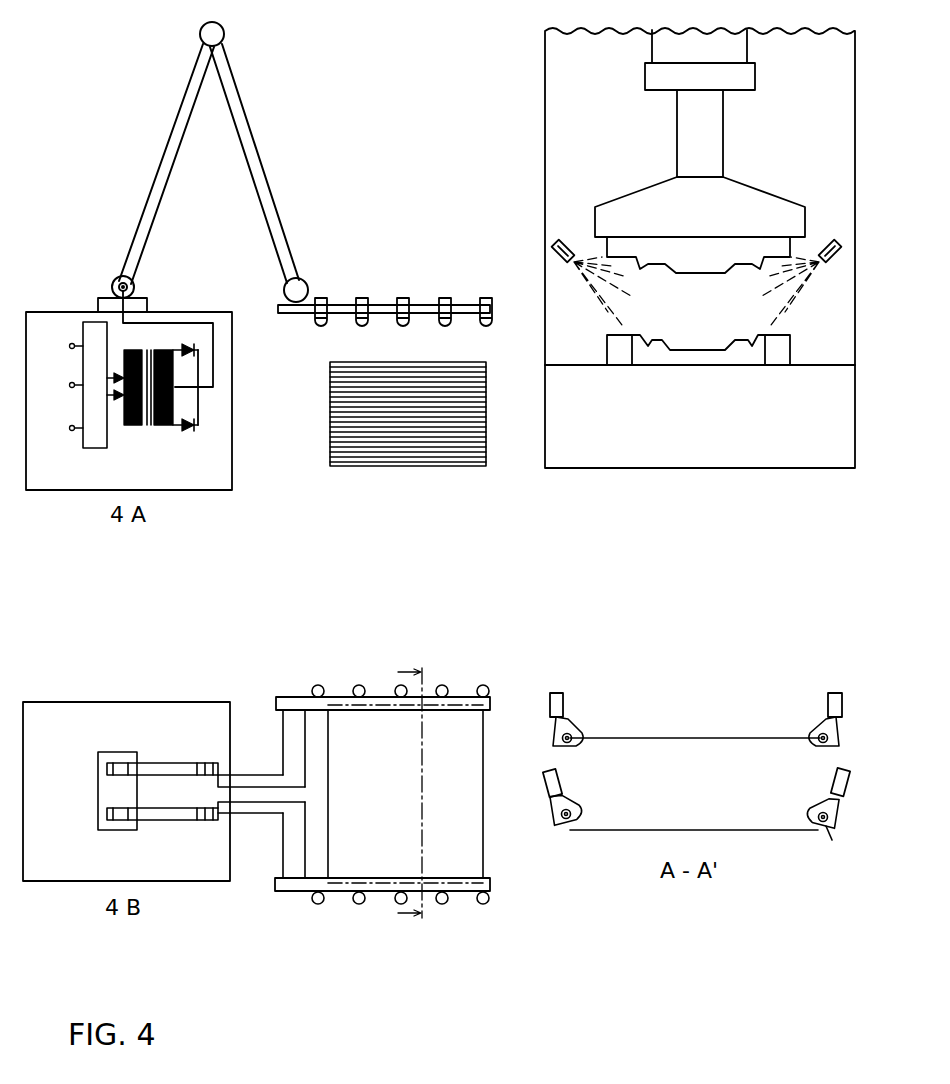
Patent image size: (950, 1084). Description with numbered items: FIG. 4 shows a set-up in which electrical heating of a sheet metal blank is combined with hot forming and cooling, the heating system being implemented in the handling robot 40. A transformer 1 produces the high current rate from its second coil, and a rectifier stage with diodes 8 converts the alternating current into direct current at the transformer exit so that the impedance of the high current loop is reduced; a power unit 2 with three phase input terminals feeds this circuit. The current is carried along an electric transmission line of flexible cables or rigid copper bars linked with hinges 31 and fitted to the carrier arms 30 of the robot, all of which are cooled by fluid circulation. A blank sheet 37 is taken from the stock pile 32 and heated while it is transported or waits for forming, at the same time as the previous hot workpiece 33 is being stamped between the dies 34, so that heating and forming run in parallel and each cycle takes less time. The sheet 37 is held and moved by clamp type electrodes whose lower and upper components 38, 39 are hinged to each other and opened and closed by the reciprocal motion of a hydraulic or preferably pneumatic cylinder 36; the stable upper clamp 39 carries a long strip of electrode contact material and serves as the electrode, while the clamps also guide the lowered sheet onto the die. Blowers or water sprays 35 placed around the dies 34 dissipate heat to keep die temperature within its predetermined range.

The transformer 1 is at (141, 428).
The rectifier / power supply unit 2 is at (99, 452).
The diodes 8 is at (183, 430).
The carrier arms 30 is at (148, 210).
The hinges 31 is at (200, 30).
The stock pile 32 is at (336, 376).
The workpiece being stamped 33 is at (686, 345).
The dies 34 is at (682, 274).
The blowers or water sprays 35 is at (818, 278).
The pneumatic cylinder 36 is at (490, 309).
The blank sheet 37 is at (472, 802).
The lower clamp 38 is at (830, 833).
The upper clamp 39 is at (288, 700).
The handling robot 40 is at (86, 312).